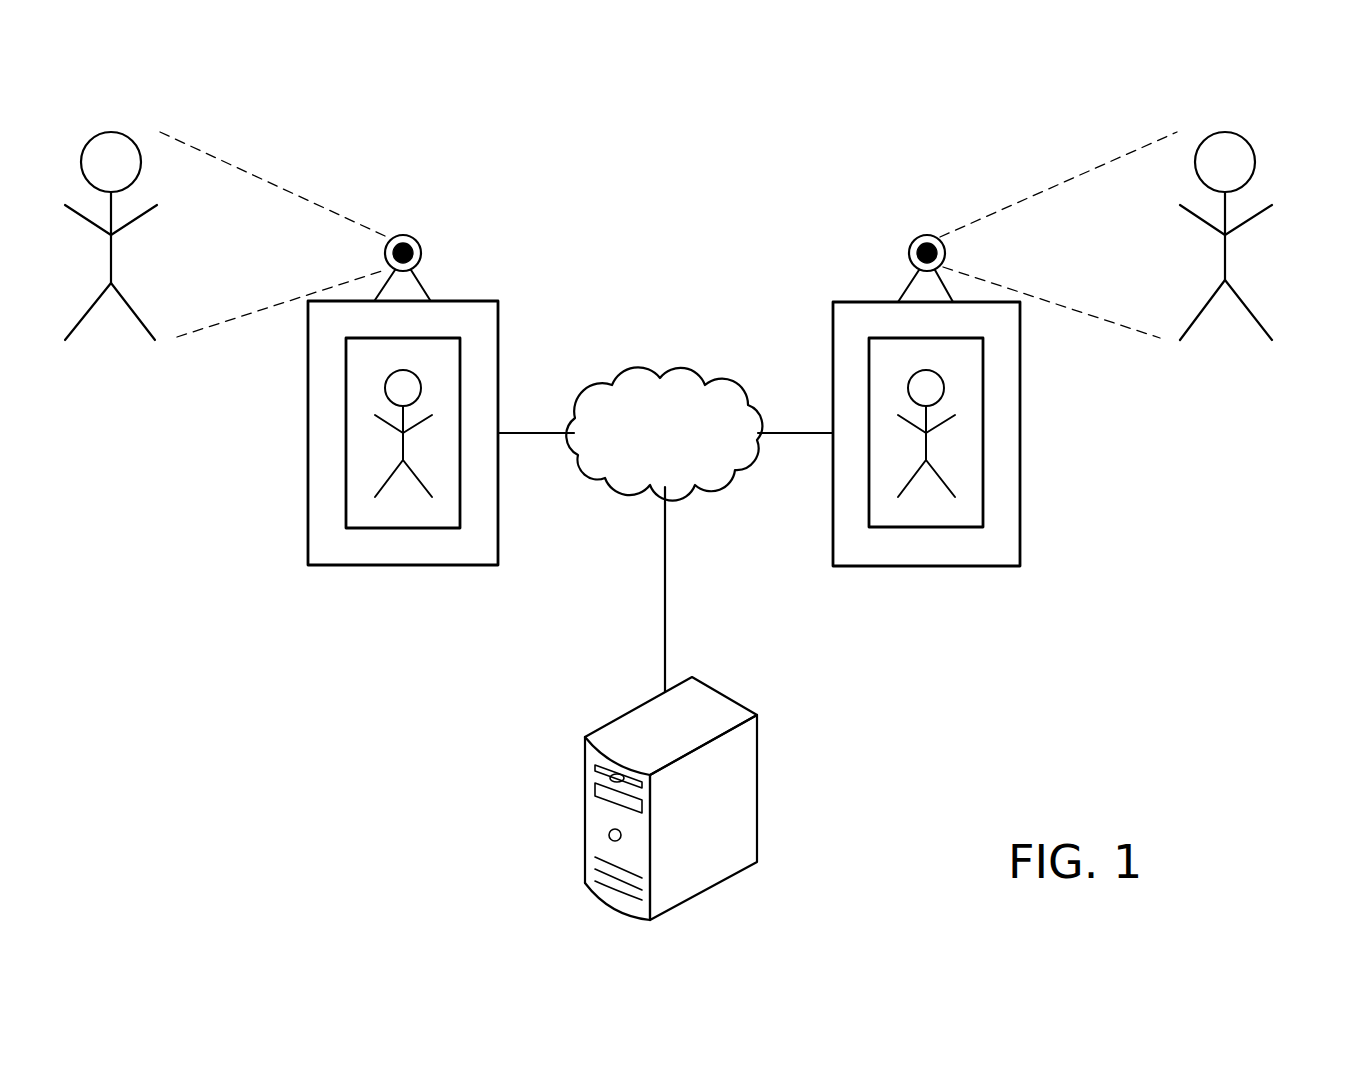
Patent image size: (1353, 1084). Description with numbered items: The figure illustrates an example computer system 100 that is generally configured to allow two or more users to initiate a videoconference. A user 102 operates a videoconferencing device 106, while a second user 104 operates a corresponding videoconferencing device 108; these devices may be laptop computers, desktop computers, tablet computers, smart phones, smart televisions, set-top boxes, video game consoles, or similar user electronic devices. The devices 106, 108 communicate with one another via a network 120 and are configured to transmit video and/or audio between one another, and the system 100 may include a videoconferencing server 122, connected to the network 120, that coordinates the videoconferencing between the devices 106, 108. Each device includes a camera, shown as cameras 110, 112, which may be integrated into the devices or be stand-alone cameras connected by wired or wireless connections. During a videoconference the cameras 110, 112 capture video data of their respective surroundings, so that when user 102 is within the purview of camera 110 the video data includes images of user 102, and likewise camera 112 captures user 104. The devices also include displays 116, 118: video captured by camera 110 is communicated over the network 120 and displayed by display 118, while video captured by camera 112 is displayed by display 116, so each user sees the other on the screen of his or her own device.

The computer system 100 is at (433, 135).
The user 102 is at (87, 318).
The user 104 is at (1243, 157).
The videoconferencing device 106 is at (373, 457).
The videoconferencing device 108 is at (960, 458).
The camera 110 is at (417, 243).
The camera 112 is at (912, 242).
The display 116 is at (362, 517).
The display 118 is at (973, 519).
The network 120 is at (700, 398).
The videoconferencing server 122 is at (738, 752).